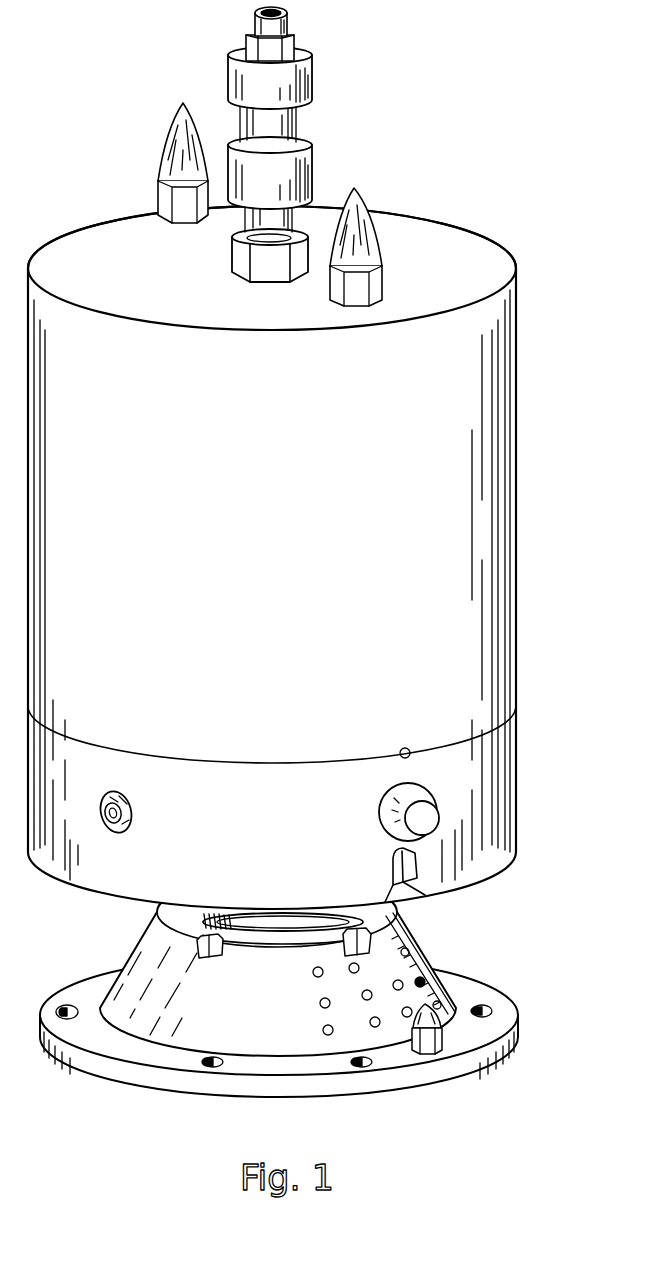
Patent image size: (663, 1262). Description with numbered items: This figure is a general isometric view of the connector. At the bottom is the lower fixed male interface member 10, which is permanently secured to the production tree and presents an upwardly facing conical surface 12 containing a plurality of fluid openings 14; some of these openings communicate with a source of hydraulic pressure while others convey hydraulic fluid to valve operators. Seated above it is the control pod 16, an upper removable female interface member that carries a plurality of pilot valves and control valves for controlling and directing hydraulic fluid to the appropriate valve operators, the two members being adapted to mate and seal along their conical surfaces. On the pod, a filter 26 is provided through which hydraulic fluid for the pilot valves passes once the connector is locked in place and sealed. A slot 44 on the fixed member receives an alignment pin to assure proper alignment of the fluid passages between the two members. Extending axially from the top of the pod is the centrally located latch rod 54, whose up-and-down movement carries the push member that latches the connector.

The lower fixed male interface member 10 is at (523, 1021).
The upwardly facing conical surface 12 is at (423, 941).
The fluid openings 14 is at (427, 980).
The control pod 16 is at (517, 445).
The filter 26 is at (441, 815).
The slot 44 is at (430, 1044).
The latch rod 54 is at (283, 228).